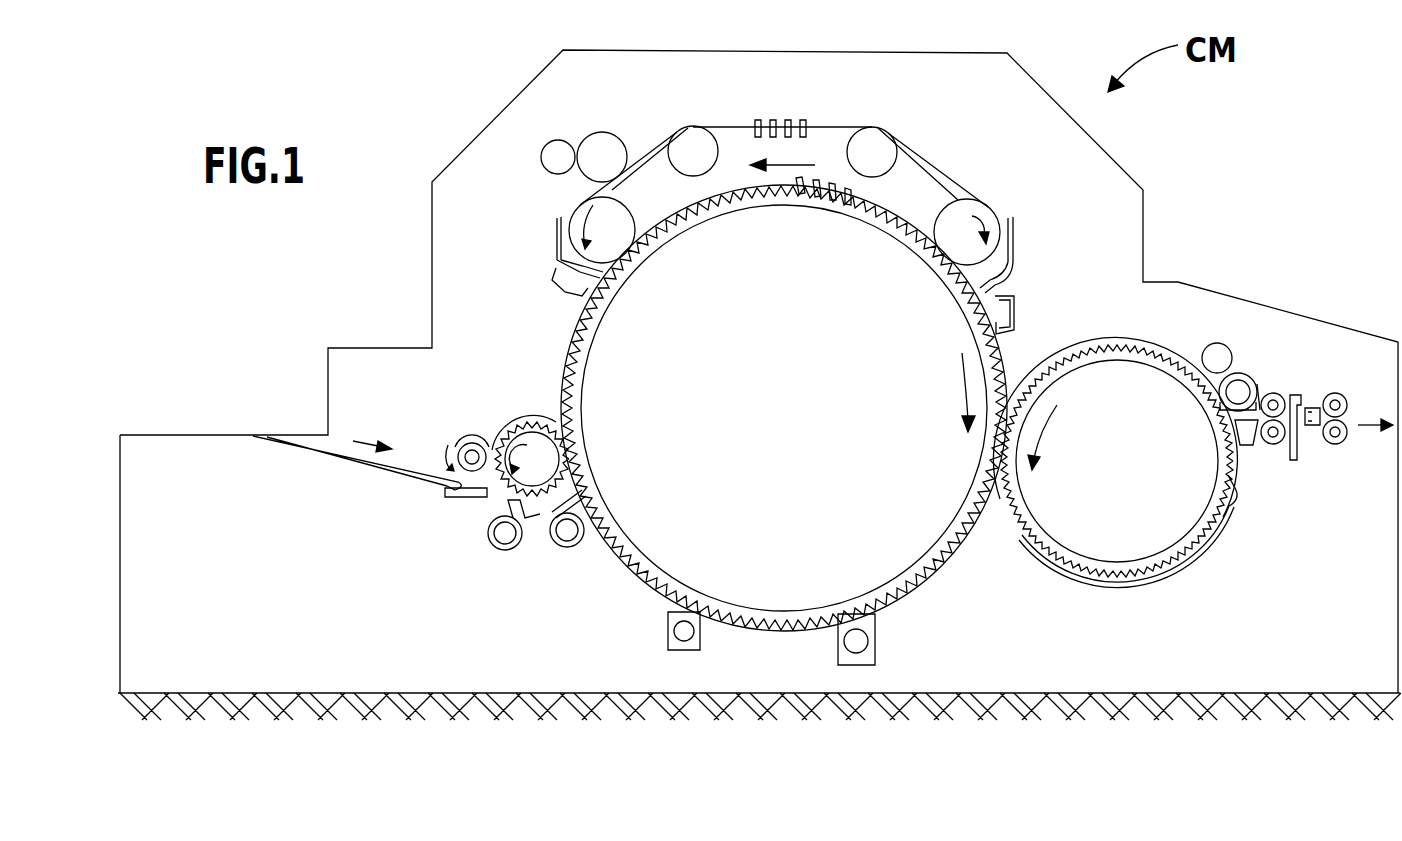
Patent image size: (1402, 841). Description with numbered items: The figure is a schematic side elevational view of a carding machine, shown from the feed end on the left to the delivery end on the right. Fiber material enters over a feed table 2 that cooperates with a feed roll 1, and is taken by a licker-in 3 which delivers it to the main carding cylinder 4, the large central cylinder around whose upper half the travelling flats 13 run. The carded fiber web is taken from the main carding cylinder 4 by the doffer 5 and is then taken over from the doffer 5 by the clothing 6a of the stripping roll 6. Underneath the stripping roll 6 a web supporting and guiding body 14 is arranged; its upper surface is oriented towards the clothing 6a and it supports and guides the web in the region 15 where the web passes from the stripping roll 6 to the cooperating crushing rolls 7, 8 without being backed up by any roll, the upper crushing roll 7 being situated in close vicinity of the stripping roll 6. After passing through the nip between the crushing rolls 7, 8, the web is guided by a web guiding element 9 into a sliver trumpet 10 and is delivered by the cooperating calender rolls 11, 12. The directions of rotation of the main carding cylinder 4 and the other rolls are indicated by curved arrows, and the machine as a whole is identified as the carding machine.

The feed roll 1 is at (462, 430).
The feed table 2 is at (367, 465).
The licker-in 3 is at (532, 433).
The main carding cylinder 4 is at (882, 562).
The doffer 5 is at (1108, 545).
The stripping roll 6 is at (1238, 380).
The clothing 6a is at (1236, 503).
The upper crushing roll 7 is at (1274, 396).
The lower crushing roll 8 is at (1271, 444).
The web guiding element 9 is at (1297, 445).
The sliver trumpet 10 is at (1313, 405).
The calender roll 11 is at (1341, 398).
The calender roll 12 is at (1342, 443).
The travelling flats 13 is at (928, 183).
The web supporting and guiding body 14 is at (1244, 445).
The region 15 is at (1258, 398).